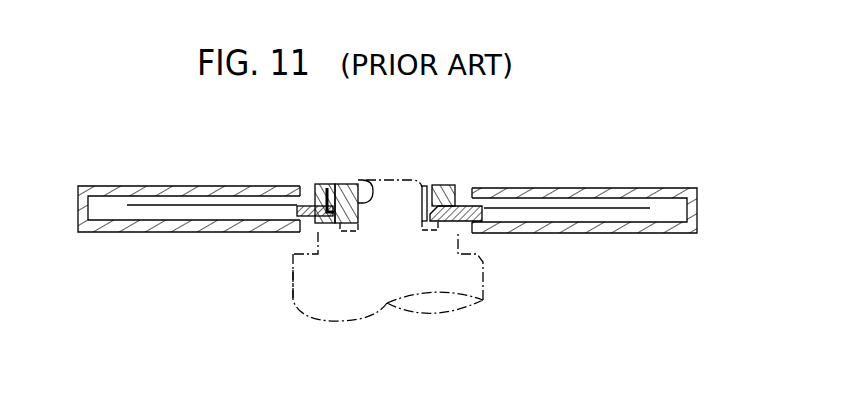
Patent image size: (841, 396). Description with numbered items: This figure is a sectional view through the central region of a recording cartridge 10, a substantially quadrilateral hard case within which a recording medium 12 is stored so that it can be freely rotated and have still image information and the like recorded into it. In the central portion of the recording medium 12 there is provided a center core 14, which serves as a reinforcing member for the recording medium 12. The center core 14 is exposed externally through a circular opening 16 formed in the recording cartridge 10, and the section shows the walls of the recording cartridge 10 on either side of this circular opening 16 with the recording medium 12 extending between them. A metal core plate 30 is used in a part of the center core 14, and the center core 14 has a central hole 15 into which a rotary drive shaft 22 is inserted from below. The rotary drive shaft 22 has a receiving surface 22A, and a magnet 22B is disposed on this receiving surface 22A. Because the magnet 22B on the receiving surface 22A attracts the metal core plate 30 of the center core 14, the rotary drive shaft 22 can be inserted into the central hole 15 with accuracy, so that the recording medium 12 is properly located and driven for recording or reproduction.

The recording cartridge 10 is at (638, 187).
The recording medium 12 is at (575, 187).
The center core 14 is at (321, 173).
The central hole 15 is at (364, 178).
The circular opening 16 is at (468, 187).
The rotary drive shaft 22 is at (376, 178).
The receiving surface 22A is at (308, 237).
The magnet 22B is at (345, 233).
The metal core plate 30 is at (485, 209).